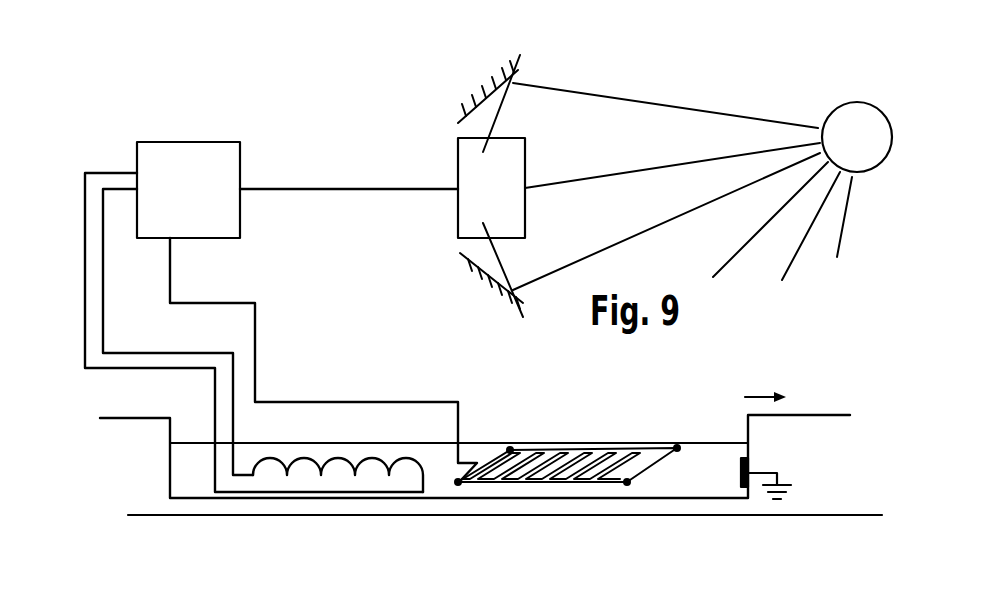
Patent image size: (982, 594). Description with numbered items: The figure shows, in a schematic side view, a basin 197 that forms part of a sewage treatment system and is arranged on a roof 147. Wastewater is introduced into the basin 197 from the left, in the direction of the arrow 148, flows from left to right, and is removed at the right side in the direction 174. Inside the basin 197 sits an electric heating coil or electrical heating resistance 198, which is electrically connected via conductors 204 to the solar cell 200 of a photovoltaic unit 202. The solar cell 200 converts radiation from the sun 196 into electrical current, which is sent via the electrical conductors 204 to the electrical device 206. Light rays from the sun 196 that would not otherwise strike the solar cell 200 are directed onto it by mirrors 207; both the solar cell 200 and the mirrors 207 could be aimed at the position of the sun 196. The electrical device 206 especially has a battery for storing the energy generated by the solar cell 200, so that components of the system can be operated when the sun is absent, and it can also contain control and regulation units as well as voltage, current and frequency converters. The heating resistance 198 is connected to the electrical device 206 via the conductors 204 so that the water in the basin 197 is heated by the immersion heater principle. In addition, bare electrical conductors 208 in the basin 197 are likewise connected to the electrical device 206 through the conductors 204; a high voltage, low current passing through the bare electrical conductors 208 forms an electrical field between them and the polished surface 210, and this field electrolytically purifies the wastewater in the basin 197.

The roof 147 is at (792, 516).
The arrow 148 is at (196, 428).
The direction 174 is at (723, 430).
The sun 196 is at (857, 137).
The basin 197 is at (170, 478).
The electric heating coil 198 is at (340, 460).
The solar cell 200 is at (491, 188).
The photovoltaic unit 202 is at (622, 85).
The electrical conductors 204 is at (113, 172).
The electrical device 206 is at (188, 190).
The mirrors 207 is at (478, 92).
The bare electrical conductors 208 is at (576, 445).
The polished surface 210 is at (752, 466).